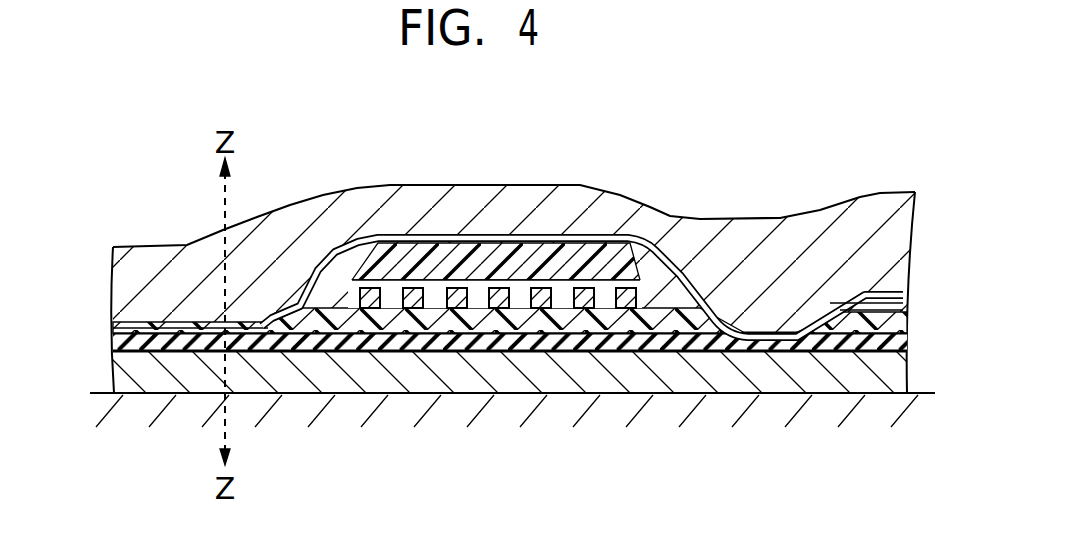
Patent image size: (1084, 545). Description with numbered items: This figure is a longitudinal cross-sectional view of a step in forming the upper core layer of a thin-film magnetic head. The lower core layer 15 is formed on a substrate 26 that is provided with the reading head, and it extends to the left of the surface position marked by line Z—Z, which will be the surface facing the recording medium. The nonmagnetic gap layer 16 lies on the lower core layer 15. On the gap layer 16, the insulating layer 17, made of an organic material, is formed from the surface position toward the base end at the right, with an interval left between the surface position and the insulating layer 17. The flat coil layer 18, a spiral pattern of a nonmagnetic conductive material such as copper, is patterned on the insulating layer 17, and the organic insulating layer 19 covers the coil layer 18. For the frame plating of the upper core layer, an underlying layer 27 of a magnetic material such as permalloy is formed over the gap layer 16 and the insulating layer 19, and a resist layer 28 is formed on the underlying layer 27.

The lower core layer 15 is at (372, 383).
The nonmagnetic gap layer 16 is at (556, 342).
The insulating layer 17 is at (657, 335).
The flat coil layer 18 is at (496, 285).
The organic insulating layer 19 is at (636, 247).
The substrate 26 is at (812, 407).
The underlying layer 27 is at (410, 243).
The resist layer 28 is at (546, 192).